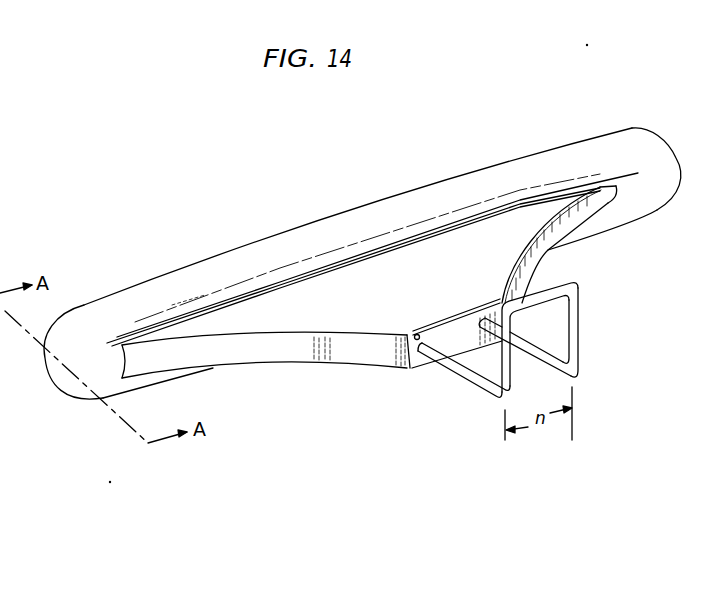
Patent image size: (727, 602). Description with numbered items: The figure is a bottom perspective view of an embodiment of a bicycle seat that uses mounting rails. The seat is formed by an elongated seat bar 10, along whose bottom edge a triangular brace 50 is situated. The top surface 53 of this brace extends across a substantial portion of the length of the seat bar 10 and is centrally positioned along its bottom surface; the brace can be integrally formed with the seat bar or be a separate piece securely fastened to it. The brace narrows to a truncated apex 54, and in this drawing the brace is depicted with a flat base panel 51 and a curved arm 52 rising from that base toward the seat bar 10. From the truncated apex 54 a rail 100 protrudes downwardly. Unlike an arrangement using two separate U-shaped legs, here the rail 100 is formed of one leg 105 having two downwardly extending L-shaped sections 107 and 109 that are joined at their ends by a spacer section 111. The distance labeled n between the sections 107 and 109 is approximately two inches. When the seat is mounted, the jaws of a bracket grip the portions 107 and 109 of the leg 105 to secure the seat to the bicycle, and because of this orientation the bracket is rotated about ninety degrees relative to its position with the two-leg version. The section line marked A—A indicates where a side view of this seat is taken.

The seat bar 10 is at (545, 154).
The triangular brace 50 is at (388, 306).
The base panel 51 is at (285, 343).
The curved arm 52 is at (549, 252).
The top surface 53 is at (366, 264).
The truncated apex 54 is at (418, 339).
The rail 100 is at (524, 365).
The leg 105 is at (581, 301).
The L-shaped section 107 is at (578, 352).
The L-shaped section 109 is at (508, 384).
The spacer section 111 is at (538, 303).